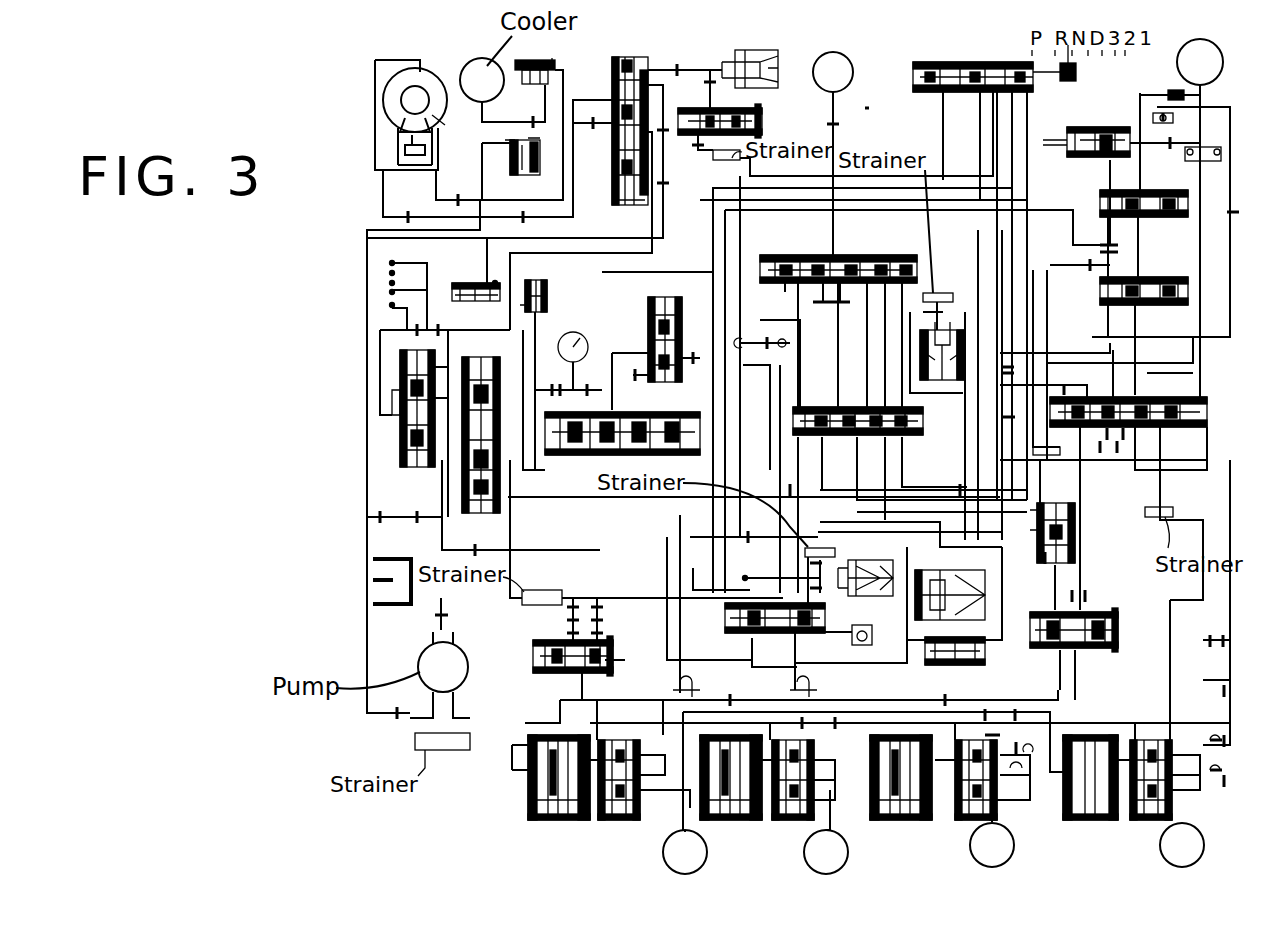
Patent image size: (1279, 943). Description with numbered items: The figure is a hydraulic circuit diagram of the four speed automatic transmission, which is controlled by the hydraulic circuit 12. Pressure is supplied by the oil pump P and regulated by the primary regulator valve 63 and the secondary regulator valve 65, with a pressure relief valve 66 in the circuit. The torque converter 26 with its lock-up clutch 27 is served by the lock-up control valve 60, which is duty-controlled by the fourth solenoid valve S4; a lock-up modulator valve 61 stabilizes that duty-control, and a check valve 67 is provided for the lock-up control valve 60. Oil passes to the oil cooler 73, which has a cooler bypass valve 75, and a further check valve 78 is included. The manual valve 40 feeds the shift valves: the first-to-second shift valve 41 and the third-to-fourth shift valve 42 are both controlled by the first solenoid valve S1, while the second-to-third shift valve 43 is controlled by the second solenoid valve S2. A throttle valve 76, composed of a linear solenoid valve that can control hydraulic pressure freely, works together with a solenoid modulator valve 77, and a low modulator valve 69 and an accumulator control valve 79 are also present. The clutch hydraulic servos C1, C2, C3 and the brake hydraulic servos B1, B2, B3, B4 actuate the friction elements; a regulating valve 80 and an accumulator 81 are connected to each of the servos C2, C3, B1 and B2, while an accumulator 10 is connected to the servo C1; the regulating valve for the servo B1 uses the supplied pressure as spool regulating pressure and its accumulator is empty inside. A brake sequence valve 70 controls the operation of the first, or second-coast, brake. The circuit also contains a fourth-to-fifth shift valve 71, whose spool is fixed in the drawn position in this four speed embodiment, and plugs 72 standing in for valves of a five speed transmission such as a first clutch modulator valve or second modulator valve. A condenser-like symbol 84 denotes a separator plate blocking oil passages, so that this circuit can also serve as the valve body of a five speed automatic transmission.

The accumulator 10 is at (1112, 127).
The hydraulic circuit 12 is at (872, 140).
The torque converter 26 is at (445, 120).
The lock-up clutch 27 is at (375, 84).
The manual valve 40 is at (912, 70).
The 1-2 shift valve 41 is at (776, 255).
The 3-4 shift valve 42 is at (803, 407).
The 2-3 shift valve 43 is at (727, 630).
The lock-up control valve 60 is at (612, 80).
The lock-up modulator valve 61 is at (762, 118).
The primary regulator valve 63 is at (482, 357).
The secondary regulator valve 65 is at (405, 338).
The pressure relief valve 66 is at (547, 290).
The check valve 67 is at (462, 283).
The low modulator valve 69 is at (1040, 568).
The B1 sequence valve 70 is at (1120, 618).
The 4-5 shift valve 71 is at (1208, 410).
The plug 72 is at (1160, 277).
The oil cooler 73 is at (472, 86).
The cooler bypass valve 75 is at (540, 152).
The throttle valve 76 is at (690, 412).
The solenoid modulator valve 77 is at (688, 308).
The check valve 78 is at (524, 84).
The accumulator control valve 79 is at (616, 668).
The regulating valve 80 is at (985, 645).
The accumulator 81 is at (562, 822).
The separator plate 84 is at (1070, 443).
The first solenoid valve S1 is at (960, 378).
The second solenoid valve S2 is at (872, 561).
The fourth solenoid valve S4 is at (779, 86).
The first brake hydraulic servo B1 is at (1182, 845).
The second brake hydraulic servo B2 is at (685, 852).
The third brake hydraulic servo B3 is at (833, 72).
The fourth brake hydraulic servo B4 is at (975, 580).
The first clutch hydraulic servo C1 is at (1200, 62).
The second clutch hydraulic servo C2 is at (826, 852).
The third clutch hydraulic servo C3 is at (992, 845).
The oil pump P is at (428, 655).